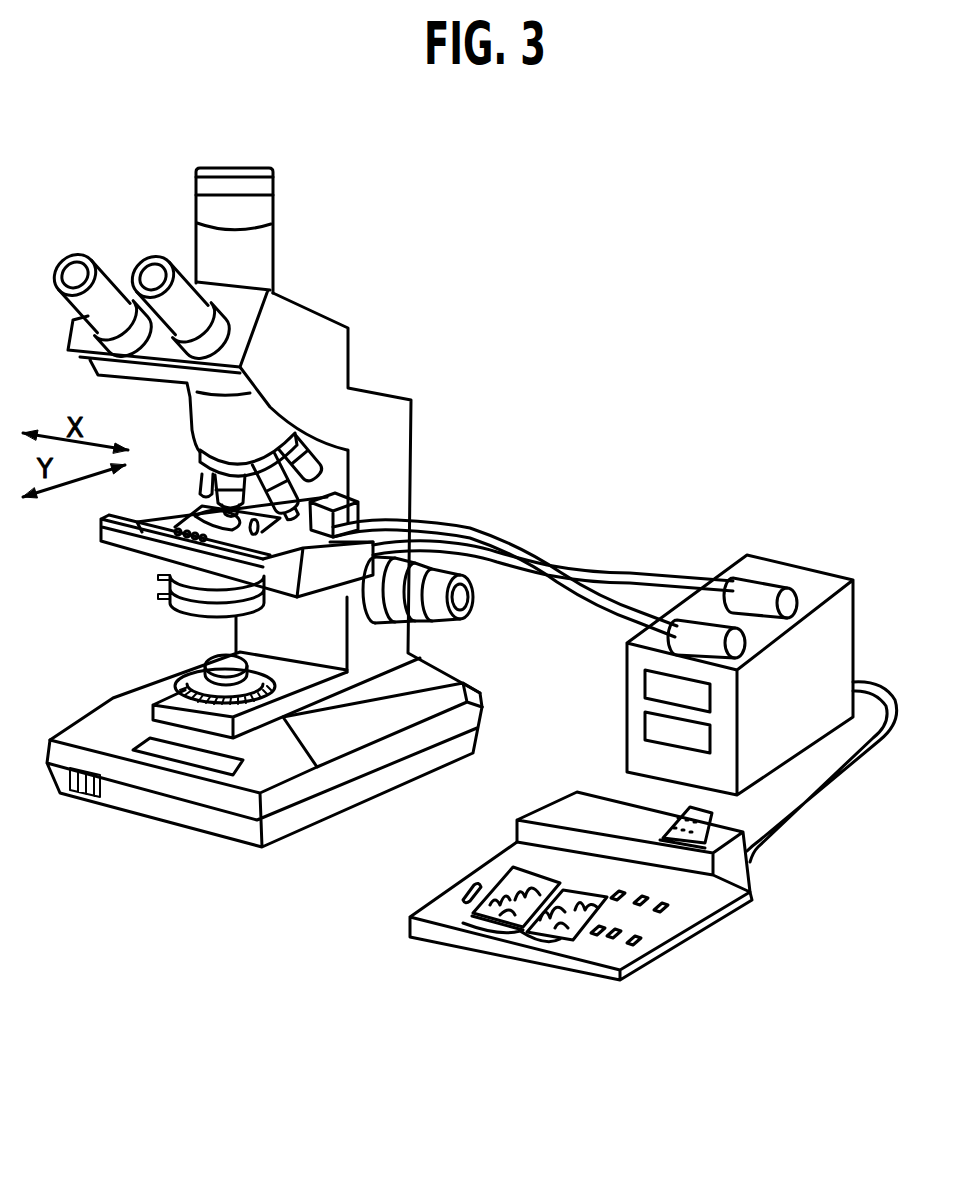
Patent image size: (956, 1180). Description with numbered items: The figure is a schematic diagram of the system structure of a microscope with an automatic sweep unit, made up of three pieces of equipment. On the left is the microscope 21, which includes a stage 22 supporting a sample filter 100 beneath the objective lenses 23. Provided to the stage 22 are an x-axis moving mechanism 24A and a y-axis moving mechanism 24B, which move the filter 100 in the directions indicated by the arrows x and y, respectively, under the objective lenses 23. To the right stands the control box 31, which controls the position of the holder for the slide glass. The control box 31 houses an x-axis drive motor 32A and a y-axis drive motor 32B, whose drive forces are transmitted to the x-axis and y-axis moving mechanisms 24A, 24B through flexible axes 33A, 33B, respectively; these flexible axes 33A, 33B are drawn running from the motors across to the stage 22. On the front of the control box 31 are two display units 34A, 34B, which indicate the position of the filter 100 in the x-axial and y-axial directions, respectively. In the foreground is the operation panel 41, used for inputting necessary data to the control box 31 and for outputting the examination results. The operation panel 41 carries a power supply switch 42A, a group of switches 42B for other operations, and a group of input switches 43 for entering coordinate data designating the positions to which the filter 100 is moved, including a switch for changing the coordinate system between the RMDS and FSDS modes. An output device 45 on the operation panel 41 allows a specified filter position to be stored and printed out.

The microscope 21 is at (397, 410).
The stage 22 is at (97, 530).
The objective lenses 23 is at (227, 492).
The x-axis moving mechanism 24A is at (327, 497).
The y-axis moving mechanism 24B is at (373, 517).
The control box 31 is at (722, 644).
The x-axis drive motor 32A is at (707, 623).
The y-axis drive motor 32B is at (770, 590).
The flexible axis 33A is at (570, 567).
The flexible axis 33B is at (658, 572).
The display unit 34A is at (643, 672).
The display unit 34B is at (643, 720).
The operation panel 41 is at (626, 861).
The power supply switch 42A is at (463, 900).
The group of switches 42B is at (627, 940).
The group of input switches 43 is at (500, 937).
The output device 45 is at (720, 812).
The sample filter 100 is at (157, 557).